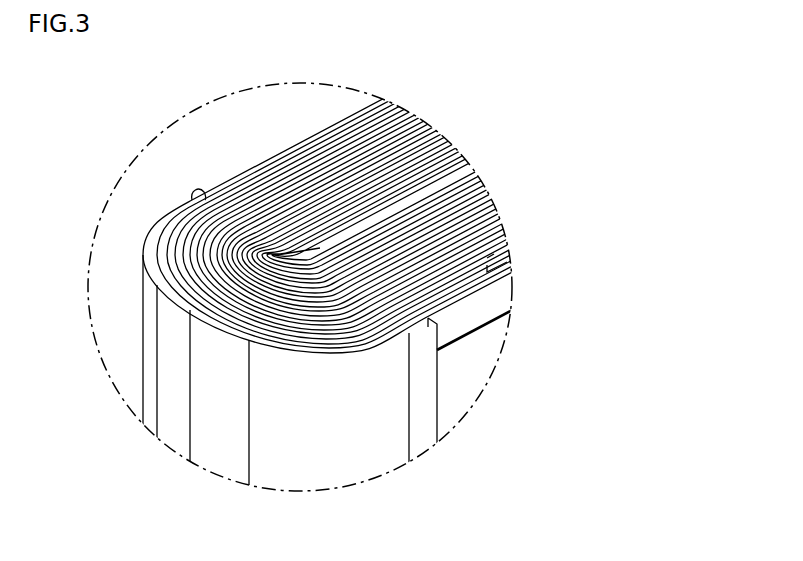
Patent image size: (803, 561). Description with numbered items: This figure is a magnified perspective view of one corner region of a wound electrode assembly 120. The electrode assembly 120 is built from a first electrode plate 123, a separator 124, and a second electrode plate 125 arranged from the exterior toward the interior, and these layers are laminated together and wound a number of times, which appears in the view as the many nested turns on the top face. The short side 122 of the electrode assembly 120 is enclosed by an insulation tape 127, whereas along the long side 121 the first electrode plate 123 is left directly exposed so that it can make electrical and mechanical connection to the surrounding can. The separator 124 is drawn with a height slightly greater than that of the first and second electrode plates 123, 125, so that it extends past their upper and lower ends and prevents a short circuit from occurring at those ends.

The electrode assembly 120 is at (622, 246).
The long side 121 is at (460, 379).
The short side 122 is at (205, 443).
The first electrode plate 123 is at (498, 358).
The separator 124 is at (489, 300).
The second electrode plate 125 is at (488, 260).
The insulation tape 127 is at (366, 459).